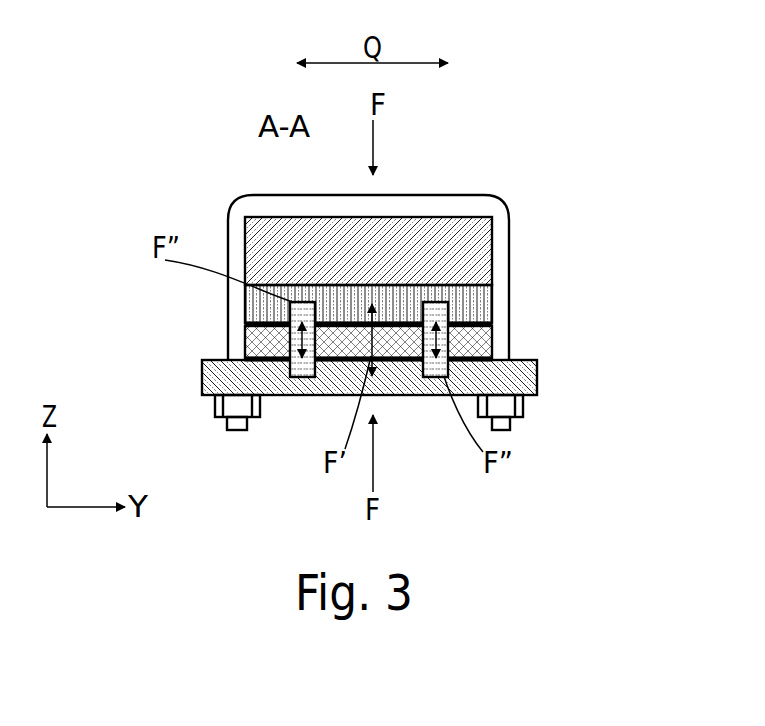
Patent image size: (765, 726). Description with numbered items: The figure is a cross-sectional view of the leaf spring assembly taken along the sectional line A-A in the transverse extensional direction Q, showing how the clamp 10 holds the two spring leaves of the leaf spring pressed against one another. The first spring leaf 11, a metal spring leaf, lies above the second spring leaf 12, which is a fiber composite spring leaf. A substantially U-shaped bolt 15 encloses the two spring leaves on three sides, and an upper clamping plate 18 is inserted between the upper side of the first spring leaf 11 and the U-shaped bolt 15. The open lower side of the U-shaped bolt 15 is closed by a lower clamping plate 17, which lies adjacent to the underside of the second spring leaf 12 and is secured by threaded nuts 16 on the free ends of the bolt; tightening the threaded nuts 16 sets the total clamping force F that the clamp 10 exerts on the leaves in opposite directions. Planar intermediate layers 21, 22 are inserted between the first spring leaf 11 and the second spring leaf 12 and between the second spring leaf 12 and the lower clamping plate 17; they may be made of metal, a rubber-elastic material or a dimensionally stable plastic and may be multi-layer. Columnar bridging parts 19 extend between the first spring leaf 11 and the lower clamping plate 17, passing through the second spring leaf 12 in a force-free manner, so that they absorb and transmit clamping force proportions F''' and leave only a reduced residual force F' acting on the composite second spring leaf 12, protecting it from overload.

The clamp 10 is at (420, 170).
The U-shaped bolt 15 is at (463, 195).
The upper clamping plate 18 is at (483, 241).
The first spring leaf 11 is at (485, 300).
The intermediate layer 21 is at (247, 323).
The second spring leaf 12 is at (485, 343).
The intermediate layer 22 is at (245, 358).
The lower clamping plate 17 is at (523, 378).
The bridging part 19 is at (302, 378).
The threaded nut 16 is at (218, 405).